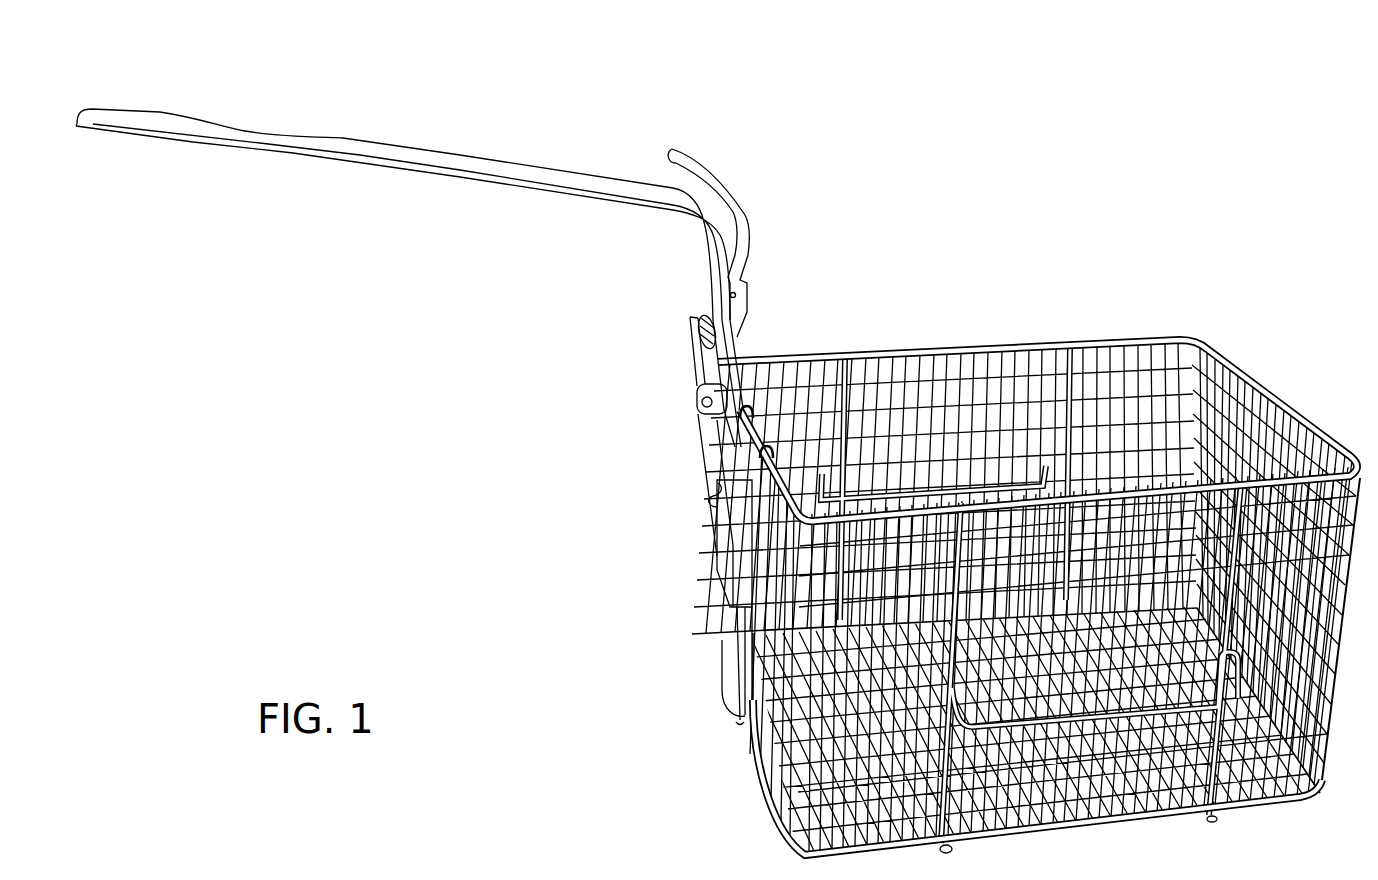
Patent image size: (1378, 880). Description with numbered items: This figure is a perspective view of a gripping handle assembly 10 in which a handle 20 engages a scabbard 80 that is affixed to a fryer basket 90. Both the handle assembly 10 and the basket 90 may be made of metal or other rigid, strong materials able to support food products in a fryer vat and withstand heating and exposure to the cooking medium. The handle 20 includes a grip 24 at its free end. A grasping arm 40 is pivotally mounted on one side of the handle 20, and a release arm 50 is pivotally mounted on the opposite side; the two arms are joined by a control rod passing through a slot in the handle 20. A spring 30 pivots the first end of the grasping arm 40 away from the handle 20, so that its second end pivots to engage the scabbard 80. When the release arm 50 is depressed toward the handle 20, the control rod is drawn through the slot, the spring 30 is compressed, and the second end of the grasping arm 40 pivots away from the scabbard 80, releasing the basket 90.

The gripping handle assembly 10 is at (824, 62).
The handle 20 is at (394, 127).
The grip 24 is at (198, 143).
The spring 30 is at (699, 301).
The grasping arm 40 is at (682, 380).
The release arm 50 is at (749, 187).
The scabbard 80 is at (706, 545).
The fryer basket 90 is at (1112, 330).